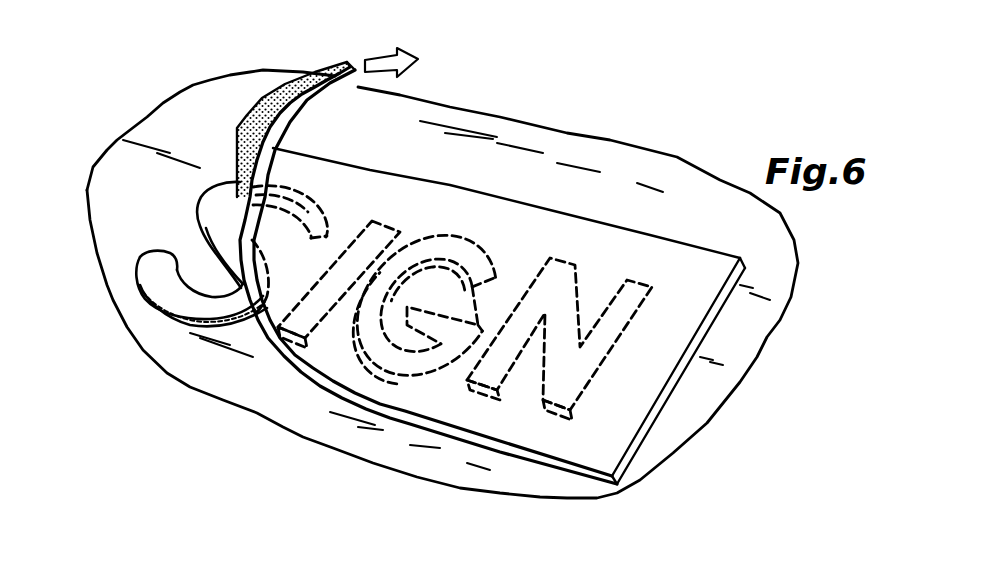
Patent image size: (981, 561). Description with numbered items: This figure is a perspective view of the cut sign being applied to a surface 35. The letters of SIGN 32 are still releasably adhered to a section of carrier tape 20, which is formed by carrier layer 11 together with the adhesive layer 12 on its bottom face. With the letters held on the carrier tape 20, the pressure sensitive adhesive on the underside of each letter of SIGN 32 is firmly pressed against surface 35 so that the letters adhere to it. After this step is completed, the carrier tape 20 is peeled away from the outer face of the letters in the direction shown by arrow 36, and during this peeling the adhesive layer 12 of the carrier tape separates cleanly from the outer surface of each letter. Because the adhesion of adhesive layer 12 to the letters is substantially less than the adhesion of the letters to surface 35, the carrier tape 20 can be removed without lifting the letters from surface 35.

The carrier layer 11 is at (307, 100).
The adhesive layer 12 is at (257, 109).
The carrier tape 20 is at (326, 64).
The SIGN 32 is at (203, 203).
The surface 35 is at (654, 163).
The arrow 36 is at (410, 52).